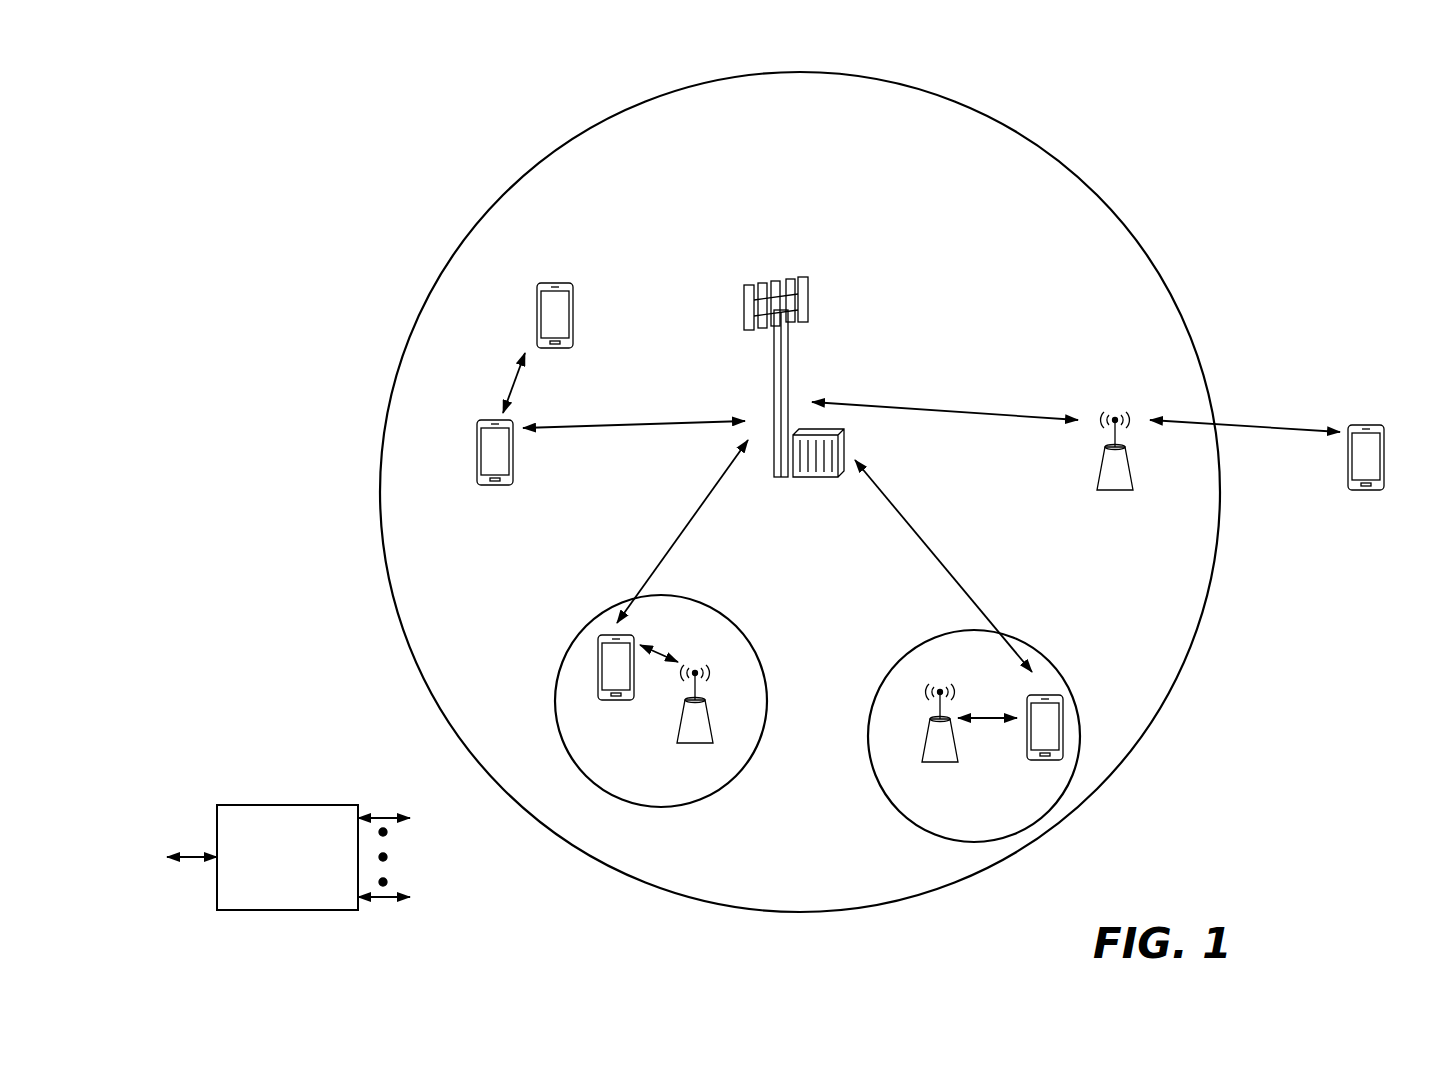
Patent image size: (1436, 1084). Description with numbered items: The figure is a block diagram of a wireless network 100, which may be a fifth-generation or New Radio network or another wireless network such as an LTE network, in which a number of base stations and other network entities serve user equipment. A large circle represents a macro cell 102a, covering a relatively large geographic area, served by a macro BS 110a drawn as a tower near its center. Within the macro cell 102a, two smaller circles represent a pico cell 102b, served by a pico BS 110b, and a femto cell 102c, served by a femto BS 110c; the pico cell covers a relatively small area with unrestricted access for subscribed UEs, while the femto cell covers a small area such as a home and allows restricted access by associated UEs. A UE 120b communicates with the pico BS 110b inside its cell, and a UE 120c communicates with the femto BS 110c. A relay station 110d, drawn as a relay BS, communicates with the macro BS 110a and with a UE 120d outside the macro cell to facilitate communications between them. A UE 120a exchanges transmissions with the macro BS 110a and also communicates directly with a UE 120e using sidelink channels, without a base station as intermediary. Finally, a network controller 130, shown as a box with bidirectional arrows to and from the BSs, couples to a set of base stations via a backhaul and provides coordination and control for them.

The wireless network 100 is at (273, 64).
The macro cell 102a is at (1078, 176).
The pico cell 102b is at (756, 640).
The femto cell 102c is at (910, 648).
The macro BS 110a is at (787, 270).
The pico BS 110b is at (716, 726).
The femto BS 110c is at (922, 746).
The relay station 110d is at (1114, 410).
The UE 120a is at (477, 450).
The UE 120b is at (608, 700).
The UE 120c is at (1032, 762).
The UE 120d is at (1378, 425).
The UE 120e is at (537, 300).
The network controller 130 is at (285, 805).